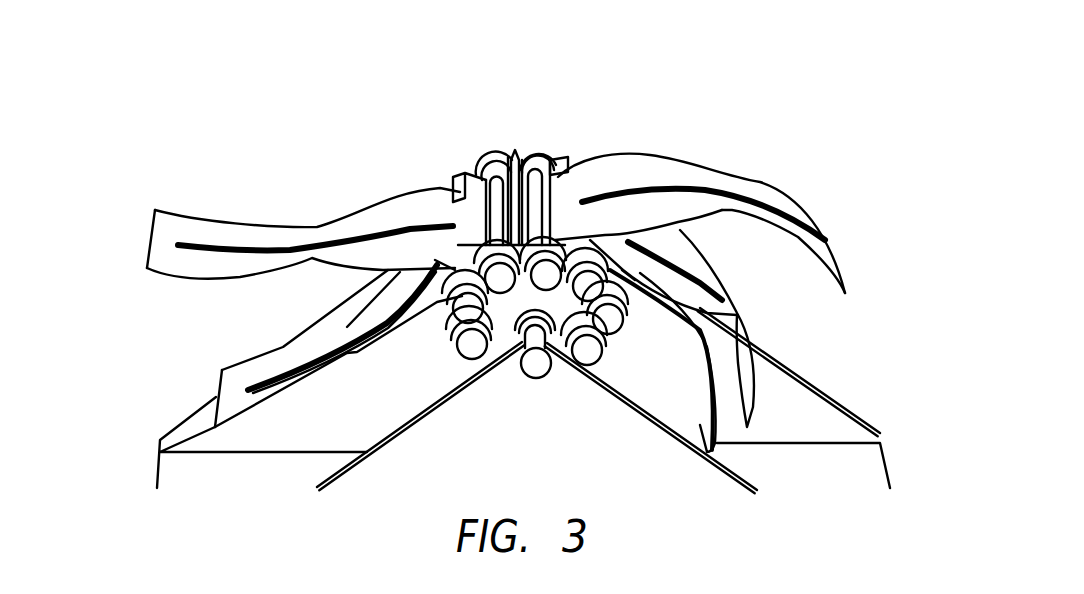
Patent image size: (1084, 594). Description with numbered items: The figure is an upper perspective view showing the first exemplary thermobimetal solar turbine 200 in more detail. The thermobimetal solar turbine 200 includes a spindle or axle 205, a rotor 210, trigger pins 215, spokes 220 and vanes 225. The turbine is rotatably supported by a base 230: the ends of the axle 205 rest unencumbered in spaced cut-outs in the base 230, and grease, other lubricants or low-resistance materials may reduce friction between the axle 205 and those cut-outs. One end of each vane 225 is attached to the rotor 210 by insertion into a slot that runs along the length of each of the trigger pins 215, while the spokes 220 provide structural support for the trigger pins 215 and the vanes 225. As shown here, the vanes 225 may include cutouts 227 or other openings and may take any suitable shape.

The thermobimetal solar turbine 200 is at (678, 125).
The axle 205 is at (530, 367).
The rotor 210 is at (500, 330).
The trigger pins 215 is at (555, 203).
The spokes 220 is at (483, 207).
The vanes 225 is at (147, 223).
The cutouts 227 is at (297, 247).
The base 230 is at (627, 433).